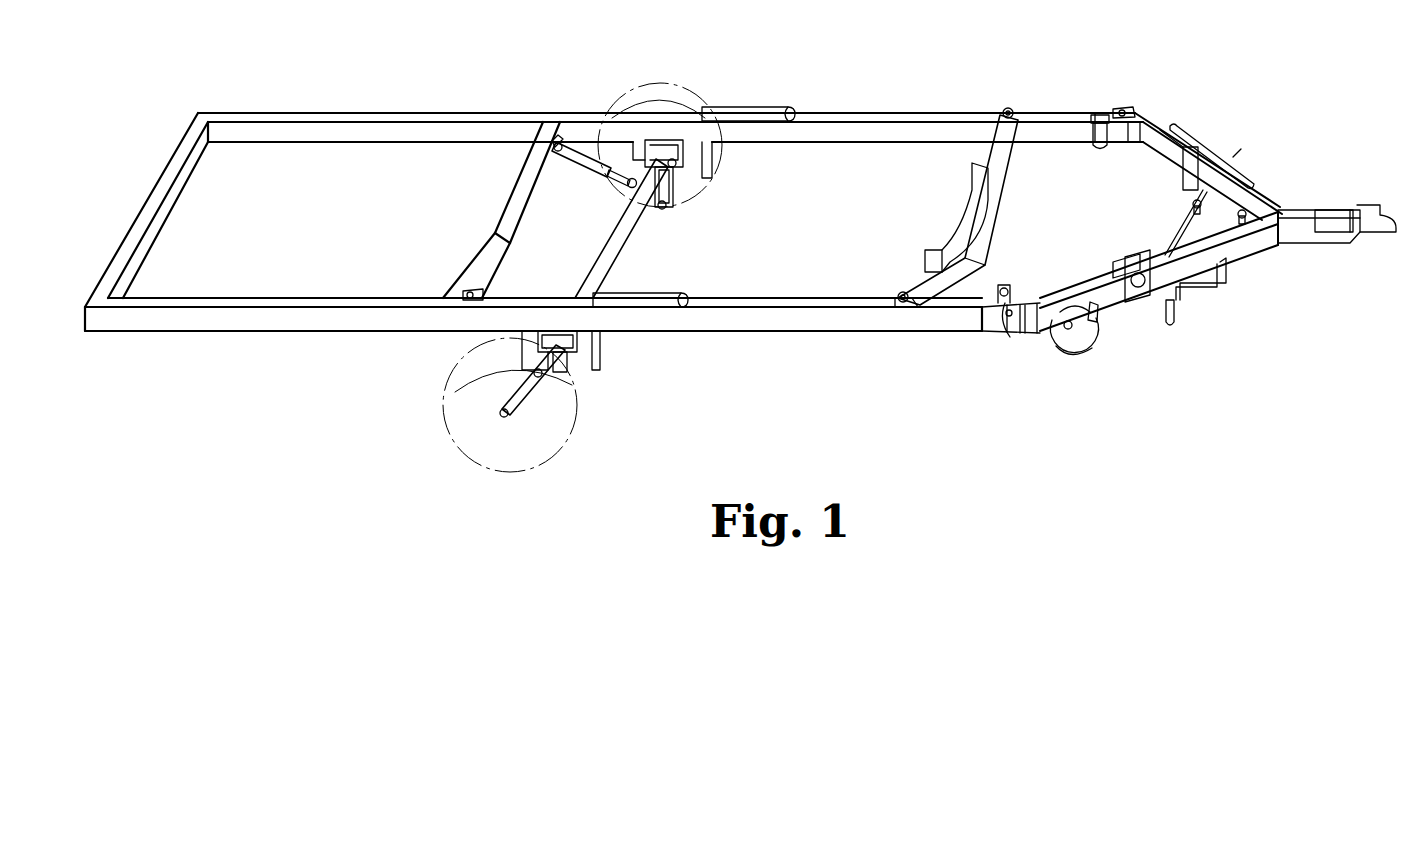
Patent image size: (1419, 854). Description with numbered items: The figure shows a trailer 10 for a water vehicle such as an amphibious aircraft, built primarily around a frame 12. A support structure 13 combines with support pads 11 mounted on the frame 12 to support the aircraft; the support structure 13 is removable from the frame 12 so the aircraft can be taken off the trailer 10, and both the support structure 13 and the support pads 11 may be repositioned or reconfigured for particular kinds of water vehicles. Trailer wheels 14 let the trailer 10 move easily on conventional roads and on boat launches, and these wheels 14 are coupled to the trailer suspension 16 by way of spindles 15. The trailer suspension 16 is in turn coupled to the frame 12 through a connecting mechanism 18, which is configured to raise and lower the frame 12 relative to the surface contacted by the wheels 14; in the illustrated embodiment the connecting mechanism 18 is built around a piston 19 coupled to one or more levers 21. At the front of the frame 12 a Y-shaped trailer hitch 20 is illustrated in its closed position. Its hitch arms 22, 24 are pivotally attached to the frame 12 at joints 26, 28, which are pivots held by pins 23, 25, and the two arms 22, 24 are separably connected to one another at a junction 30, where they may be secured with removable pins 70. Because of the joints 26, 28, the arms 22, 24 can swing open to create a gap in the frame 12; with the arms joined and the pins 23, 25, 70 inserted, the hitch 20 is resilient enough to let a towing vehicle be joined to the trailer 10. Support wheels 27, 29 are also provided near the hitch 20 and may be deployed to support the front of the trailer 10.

The trailer 10 is at (890, 61).
The support pads 11 is at (745, 107).
The frame 12 is at (808, 320).
The support structure 13 is at (963, 213).
The trailer wheels 14 is at (670, 93).
The spindles 15 is at (500, 405).
The trailer suspension 16 is at (612, 238).
The connecting mechanism 18 is at (588, 140).
The piston 19 is at (610, 170).
The trailer hitch 20 is at (1258, 143).
The levers 21 is at (675, 185).
The hitch arm 22 is at (1170, 138).
The pin 23 is at (1097, 140).
The hitch arm 24 is at (1240, 246).
The pin 25 is at (1004, 290).
The joint 26 is at (1122, 113).
The support wheel 27 is at (1240, 175).
The joint 28 is at (1010, 337).
The support wheel 29 is at (1083, 333).
The junction 30 is at (1247, 187).
The removable pins 70 is at (1238, 222).